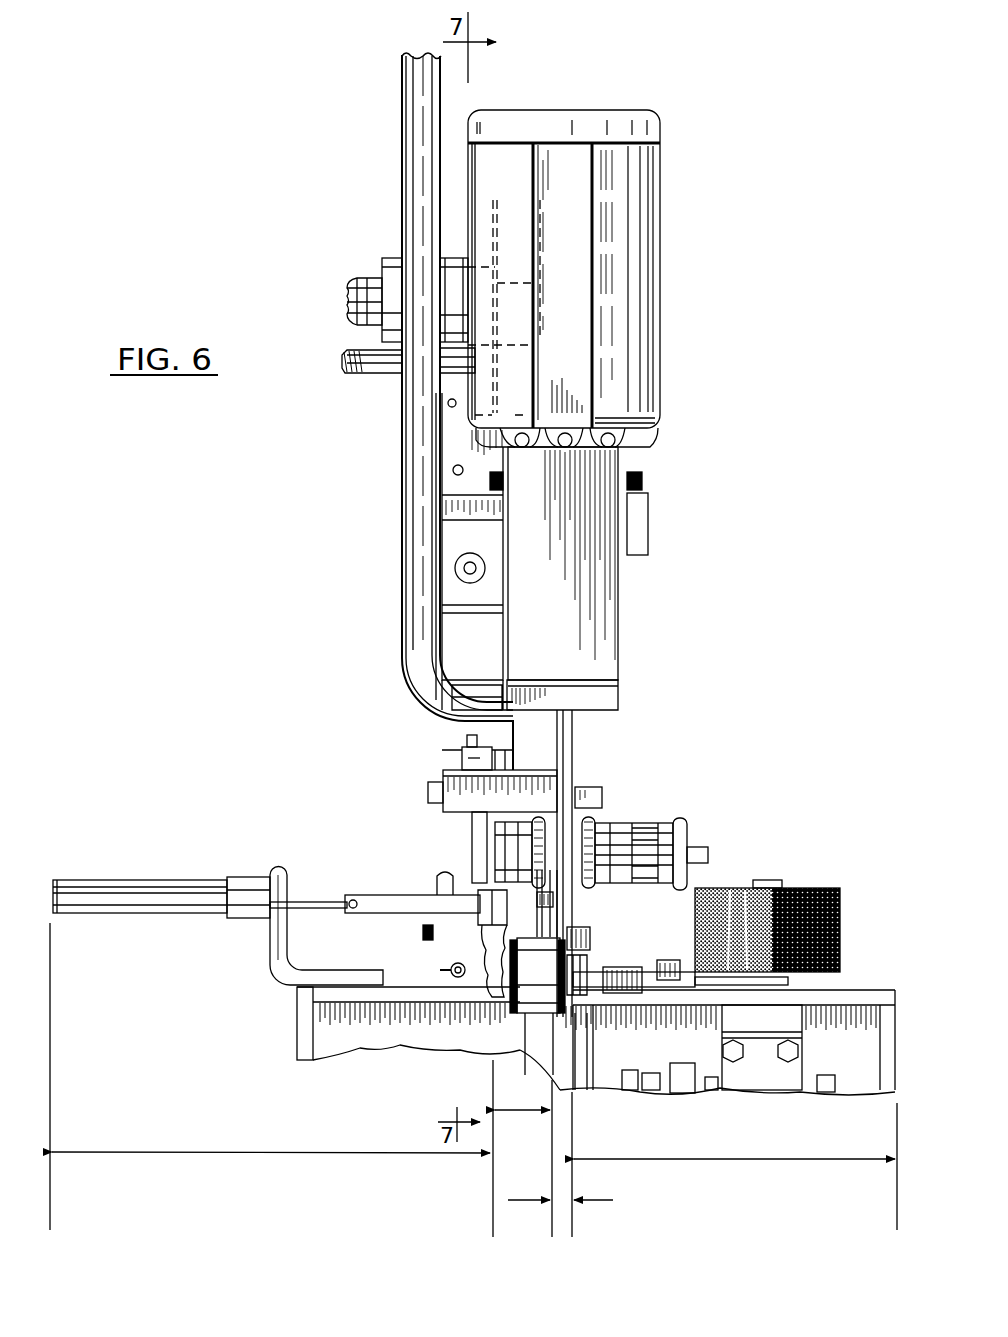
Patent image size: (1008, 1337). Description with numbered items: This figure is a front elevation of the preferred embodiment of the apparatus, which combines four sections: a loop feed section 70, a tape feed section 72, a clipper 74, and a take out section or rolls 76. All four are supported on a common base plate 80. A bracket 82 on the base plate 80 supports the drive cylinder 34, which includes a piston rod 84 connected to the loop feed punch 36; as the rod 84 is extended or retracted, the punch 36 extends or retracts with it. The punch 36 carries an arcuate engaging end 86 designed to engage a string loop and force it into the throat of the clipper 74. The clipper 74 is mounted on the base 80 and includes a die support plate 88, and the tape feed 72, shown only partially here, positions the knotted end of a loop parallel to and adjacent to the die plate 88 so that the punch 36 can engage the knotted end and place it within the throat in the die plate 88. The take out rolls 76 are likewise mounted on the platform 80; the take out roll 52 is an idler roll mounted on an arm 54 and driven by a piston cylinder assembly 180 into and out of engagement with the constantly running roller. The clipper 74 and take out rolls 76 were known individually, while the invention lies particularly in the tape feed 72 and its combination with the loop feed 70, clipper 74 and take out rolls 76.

The drive cylinder 34 is at (128, 893).
The loop feed punch 36 is at (377, 901).
The take out roll 52 is at (782, 888).
The arm 54 is at (693, 968).
The loop feed section 70 is at (290, 1158).
The tape feed section 72 is at (520, 1112).
The clipper 74 is at (595, 1209).
The take out rolls 76 is at (738, 1166).
The base plate 80 is at (322, 992).
The bracket 82 is at (273, 968).
The piston rod 84 is at (307, 902).
The arcuate engaging end 86 is at (532, 920).
The die support plate 88 is at (586, 928).
The piston cylinder assembly 180 is at (555, 979).